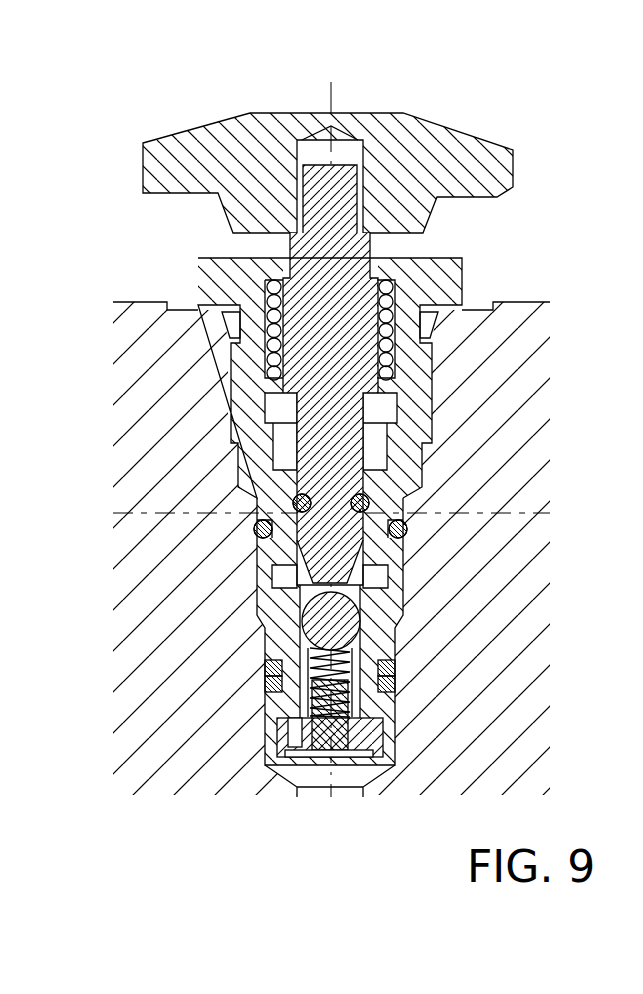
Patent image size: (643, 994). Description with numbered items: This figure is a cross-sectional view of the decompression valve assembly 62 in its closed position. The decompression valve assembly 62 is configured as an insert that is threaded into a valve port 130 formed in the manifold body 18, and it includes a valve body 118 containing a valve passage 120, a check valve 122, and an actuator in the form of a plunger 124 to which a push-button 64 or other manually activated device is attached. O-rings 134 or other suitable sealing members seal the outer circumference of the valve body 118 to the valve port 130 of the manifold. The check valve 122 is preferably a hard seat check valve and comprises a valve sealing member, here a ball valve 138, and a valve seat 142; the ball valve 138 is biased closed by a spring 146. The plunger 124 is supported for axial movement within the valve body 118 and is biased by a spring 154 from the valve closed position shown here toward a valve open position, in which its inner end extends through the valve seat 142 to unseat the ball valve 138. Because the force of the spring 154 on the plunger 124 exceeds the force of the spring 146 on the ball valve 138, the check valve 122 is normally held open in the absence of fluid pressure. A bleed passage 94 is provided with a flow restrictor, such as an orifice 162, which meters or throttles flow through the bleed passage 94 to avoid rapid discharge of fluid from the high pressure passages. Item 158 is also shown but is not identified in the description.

The manifold body 18 is at (527, 457).
The decompression valve assembly 62 is at (271, 233).
The push-button 64 is at (412, 133).
The bleed passage 94 is at (262, 618).
The valve body 118 is at (447, 285).
The valve passage 120 is at (355, 570).
The check valve 122 is at (371, 626).
The plunger 124 is at (313, 405).
The valve port 130 is at (433, 322).
The O-rings 134 is at (292, 506).
The ball valve 138 is at (317, 630).
The valve seat 142 is at (298, 608).
The spring 146 is at (312, 677).
The spring 154 is at (262, 333).
The cartridge shoulder 158 is at (393, 393).
The orifice 162 is at (253, 532).